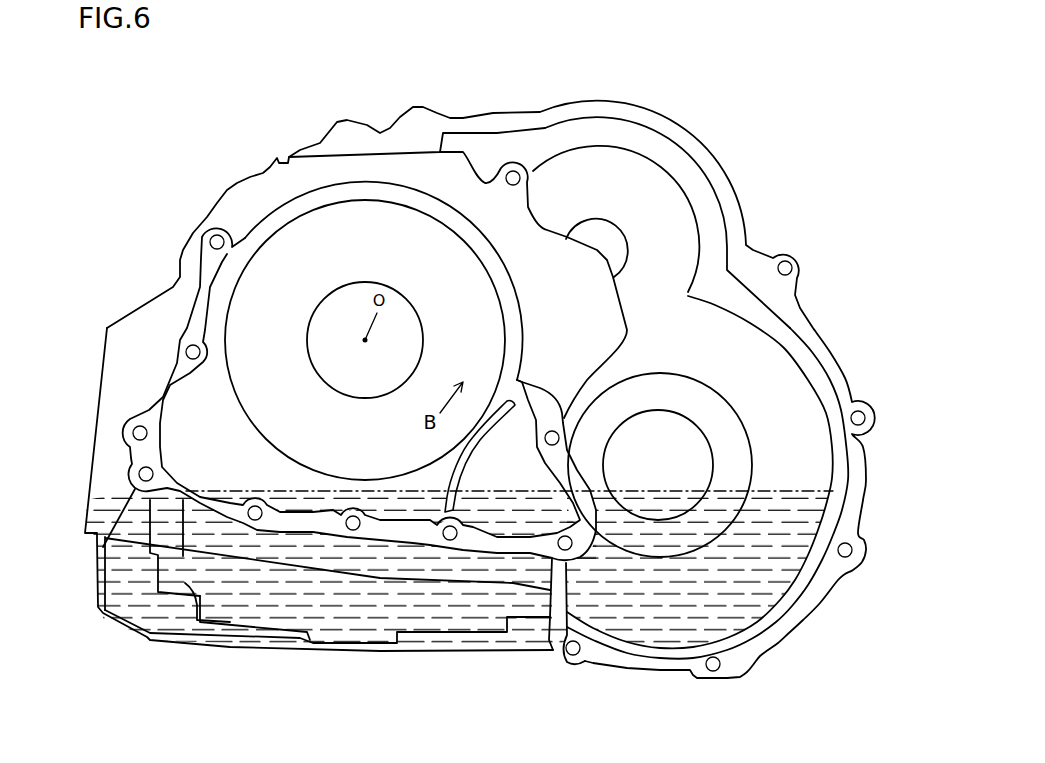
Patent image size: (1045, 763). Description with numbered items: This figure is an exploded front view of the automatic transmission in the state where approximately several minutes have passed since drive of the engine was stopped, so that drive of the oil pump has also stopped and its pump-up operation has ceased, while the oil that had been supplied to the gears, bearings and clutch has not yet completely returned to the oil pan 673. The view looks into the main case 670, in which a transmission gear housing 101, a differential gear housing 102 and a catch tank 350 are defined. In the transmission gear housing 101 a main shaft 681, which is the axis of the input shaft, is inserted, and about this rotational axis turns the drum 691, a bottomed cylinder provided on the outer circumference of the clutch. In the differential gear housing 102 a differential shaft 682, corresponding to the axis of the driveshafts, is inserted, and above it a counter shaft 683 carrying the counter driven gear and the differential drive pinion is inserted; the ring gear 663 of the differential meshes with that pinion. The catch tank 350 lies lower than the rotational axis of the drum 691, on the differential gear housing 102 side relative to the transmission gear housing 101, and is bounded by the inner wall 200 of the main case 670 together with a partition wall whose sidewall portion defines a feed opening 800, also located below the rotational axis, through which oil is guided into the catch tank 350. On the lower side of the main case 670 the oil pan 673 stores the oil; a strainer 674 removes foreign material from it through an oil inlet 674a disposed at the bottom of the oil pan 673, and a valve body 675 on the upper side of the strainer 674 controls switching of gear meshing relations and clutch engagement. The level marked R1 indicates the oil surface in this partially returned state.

The transmission gear housing 101 is at (199, 448).
The differential gear housing 102 is at (731, 286).
The inner wall 200 is at (430, 198).
The catch tank 350 is at (530, 523).
The ring gear 663 is at (802, 370).
The main case 670 is at (580, 110).
The oil pan 673 is at (455, 652).
The strainer 674 is at (278, 612).
The oil inlet 674a is at (357, 638).
The valve body 675 is at (187, 580).
The main shaft 681 is at (325, 300).
The differential shaft 682 is at (703, 426).
The counter shaft 683 is at (620, 228).
The drum 691 is at (312, 207).
The feed opening 800 is at (518, 378).
The oil level R1 is at (795, 489).